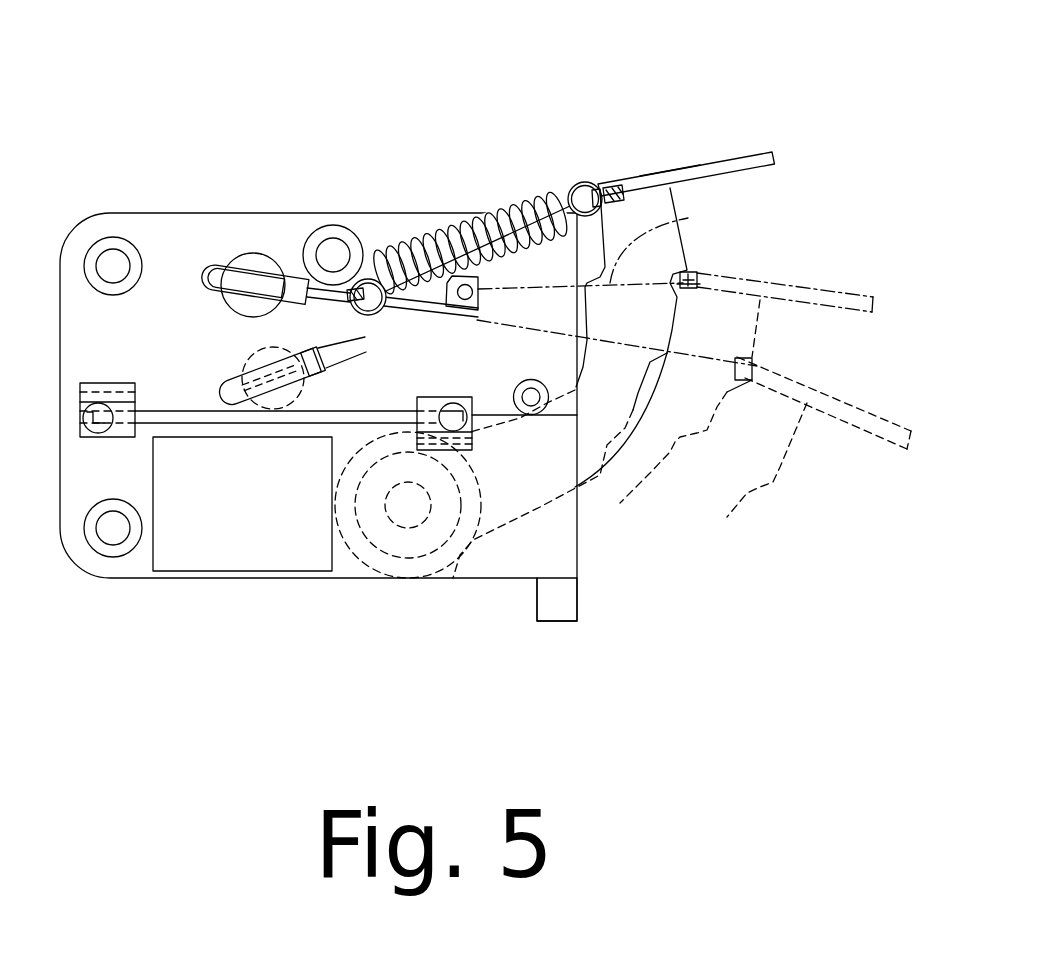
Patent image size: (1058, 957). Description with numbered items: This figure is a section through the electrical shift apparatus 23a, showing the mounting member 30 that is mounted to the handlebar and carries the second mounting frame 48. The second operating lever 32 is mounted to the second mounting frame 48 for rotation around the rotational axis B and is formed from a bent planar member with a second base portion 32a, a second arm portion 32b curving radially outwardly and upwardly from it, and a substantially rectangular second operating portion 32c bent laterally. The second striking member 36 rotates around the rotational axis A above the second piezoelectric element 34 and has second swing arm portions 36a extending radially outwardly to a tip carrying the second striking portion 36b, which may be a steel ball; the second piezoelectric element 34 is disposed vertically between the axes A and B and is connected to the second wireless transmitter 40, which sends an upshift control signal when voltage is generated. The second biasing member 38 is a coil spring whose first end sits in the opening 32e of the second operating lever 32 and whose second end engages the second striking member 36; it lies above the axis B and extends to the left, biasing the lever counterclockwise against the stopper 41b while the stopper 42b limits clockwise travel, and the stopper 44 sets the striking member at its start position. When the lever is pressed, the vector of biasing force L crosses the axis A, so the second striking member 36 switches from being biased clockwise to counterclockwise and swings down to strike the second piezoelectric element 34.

The mounting member 30 is at (245, 202).
The electrical shift apparatus 23a is at (420, 123).
The second striking member 36 is at (321, 248).
The second swing arm portions 36a is at (427, 307).
The second striking portion 36b is at (225, 298).
The stopper 44 is at (338, 222).
The second biasing member 38 is at (503, 196).
The second operating lever 32 is at (756, 158).
The second base portion 32a is at (453, 578).
The second arm portion 32b is at (685, 240).
The second operating portion 32c is at (657, 177).
The opening 32e is at (600, 185).
The vector of biasing force L is at (688, 218).
The rotational axis A is at (482, 290).
The rotational axis B is at (408, 505).
The second piezoelectric element 34 is at (380, 393).
The second wireless transmitter 40 is at (253, 563).
The stopper 41b is at (548, 408).
The stopper 42b is at (577, 608).
The second mounting frame 48 is at (138, 580).